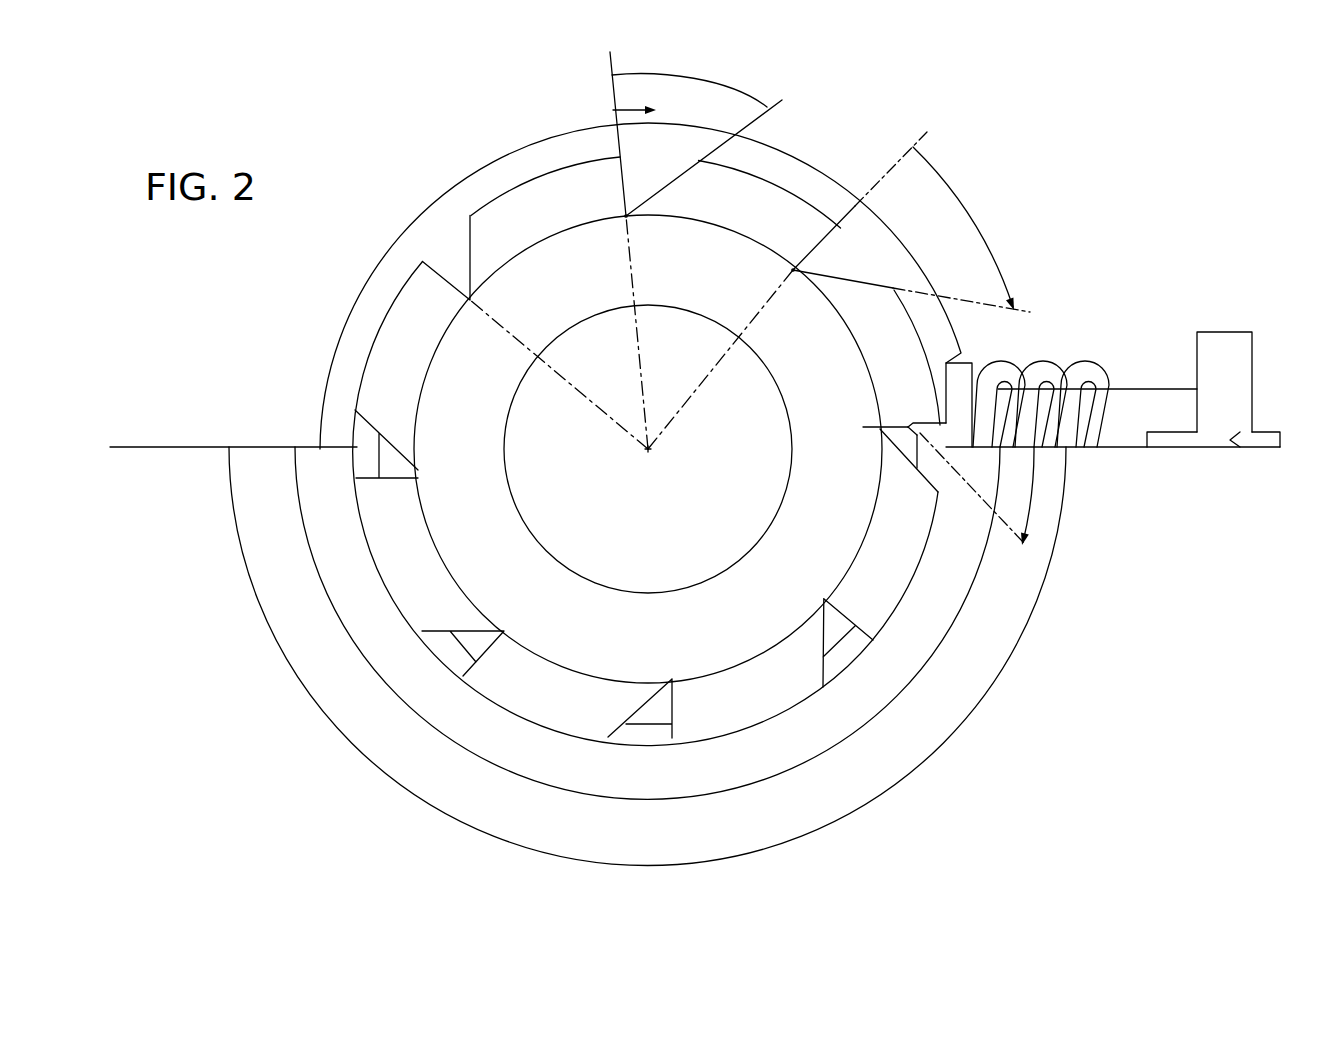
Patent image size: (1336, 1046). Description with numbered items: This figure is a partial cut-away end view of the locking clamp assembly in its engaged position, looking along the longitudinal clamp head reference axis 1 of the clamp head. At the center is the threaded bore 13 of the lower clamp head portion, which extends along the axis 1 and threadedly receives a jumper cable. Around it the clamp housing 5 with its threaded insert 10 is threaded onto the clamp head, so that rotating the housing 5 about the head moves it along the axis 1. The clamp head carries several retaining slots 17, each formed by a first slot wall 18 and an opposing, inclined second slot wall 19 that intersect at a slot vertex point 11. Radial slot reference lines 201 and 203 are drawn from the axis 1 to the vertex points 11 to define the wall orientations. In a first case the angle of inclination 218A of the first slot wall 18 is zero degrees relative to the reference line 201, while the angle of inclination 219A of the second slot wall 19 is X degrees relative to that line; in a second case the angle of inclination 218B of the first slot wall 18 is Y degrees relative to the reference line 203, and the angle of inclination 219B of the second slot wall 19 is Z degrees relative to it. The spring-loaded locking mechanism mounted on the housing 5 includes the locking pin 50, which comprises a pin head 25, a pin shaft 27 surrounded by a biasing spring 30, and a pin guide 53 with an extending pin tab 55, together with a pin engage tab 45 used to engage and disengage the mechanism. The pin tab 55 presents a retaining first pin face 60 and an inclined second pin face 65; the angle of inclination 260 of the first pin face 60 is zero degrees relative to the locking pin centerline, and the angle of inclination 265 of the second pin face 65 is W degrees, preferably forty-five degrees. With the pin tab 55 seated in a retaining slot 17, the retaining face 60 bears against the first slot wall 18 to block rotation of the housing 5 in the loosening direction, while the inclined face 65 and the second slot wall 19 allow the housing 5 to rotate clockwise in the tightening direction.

The longitudinal clamp head reference axis 1 is at (651, 452).
The clamp housing 5 is at (368, 724).
The threaded insert 10 is at (484, 729).
The slot vertex point 11 is at (625, 220).
The threaded bore 13 is at (576, 489).
The retaining slot 17 is at (440, 247).
The first slot wall 18 is at (617, 177).
The second slot wall 19 is at (663, 182).
The pin head 25 is at (1217, 345).
The pin shaft 27 is at (1147, 407).
The biasing spring 30 is at (1043, 370).
The pin engage tab 45 is at (1172, 442).
The locking pin 50 is at (1173, 350).
The pin guide 53 is at (975, 362).
The extending pin tab 55 is at (928, 436).
The retaining first pin face 60 is at (915, 422).
The inclined second pin face 65 is at (904, 458).
The radial slot reference line 201 is at (685, 402).
The radial slot reference line 203 is at (640, 373).
The angle of inclination of the first slot wall 218A is at (837, 230).
The angle of inclination of the first slot wall 218B is at (613, 108).
The angle of inclination of the second slot wall 219A is at (1005, 290).
The angle of inclination of the second slot wall 219B is at (738, 98).
The angle of inclination of the retaining first pin face 260 is at (875, 430).
The angle of inclination of the second pin face 265 is at (1032, 502).